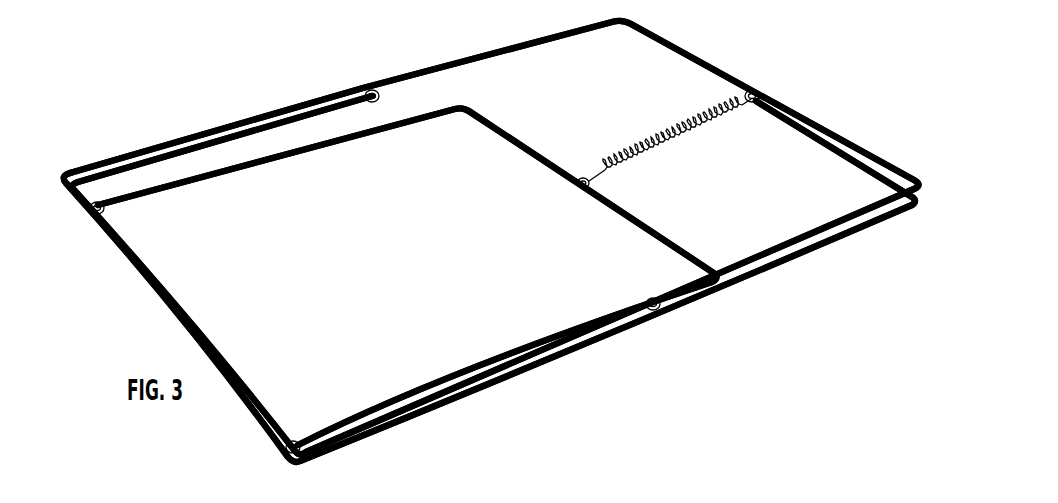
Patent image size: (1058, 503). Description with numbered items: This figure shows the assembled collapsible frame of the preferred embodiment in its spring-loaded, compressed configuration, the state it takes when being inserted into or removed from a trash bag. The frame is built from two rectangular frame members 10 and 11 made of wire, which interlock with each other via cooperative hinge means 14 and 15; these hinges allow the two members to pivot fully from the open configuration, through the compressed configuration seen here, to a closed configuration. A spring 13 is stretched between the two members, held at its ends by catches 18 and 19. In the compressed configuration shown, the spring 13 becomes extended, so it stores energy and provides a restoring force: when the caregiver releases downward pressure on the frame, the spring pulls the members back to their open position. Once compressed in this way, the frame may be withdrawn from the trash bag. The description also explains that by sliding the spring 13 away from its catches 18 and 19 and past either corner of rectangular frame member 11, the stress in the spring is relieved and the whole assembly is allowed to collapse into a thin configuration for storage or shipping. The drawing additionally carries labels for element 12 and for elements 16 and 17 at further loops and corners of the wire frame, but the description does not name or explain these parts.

The rectangular frame member 10 is at (850, 238).
The rectangular frame member 11 is at (897, 166).
The inner frame 12 is at (492, 126).
The spring 13 is at (667, 129).
The hinge means 14 is at (661, 312).
The hinge means 15 is at (369, 89).
The hinge loop 16 is at (291, 441).
The hinge loop 17 is at (106, 213).
The catch 18 is at (756, 90).
The catch 19 is at (584, 177).